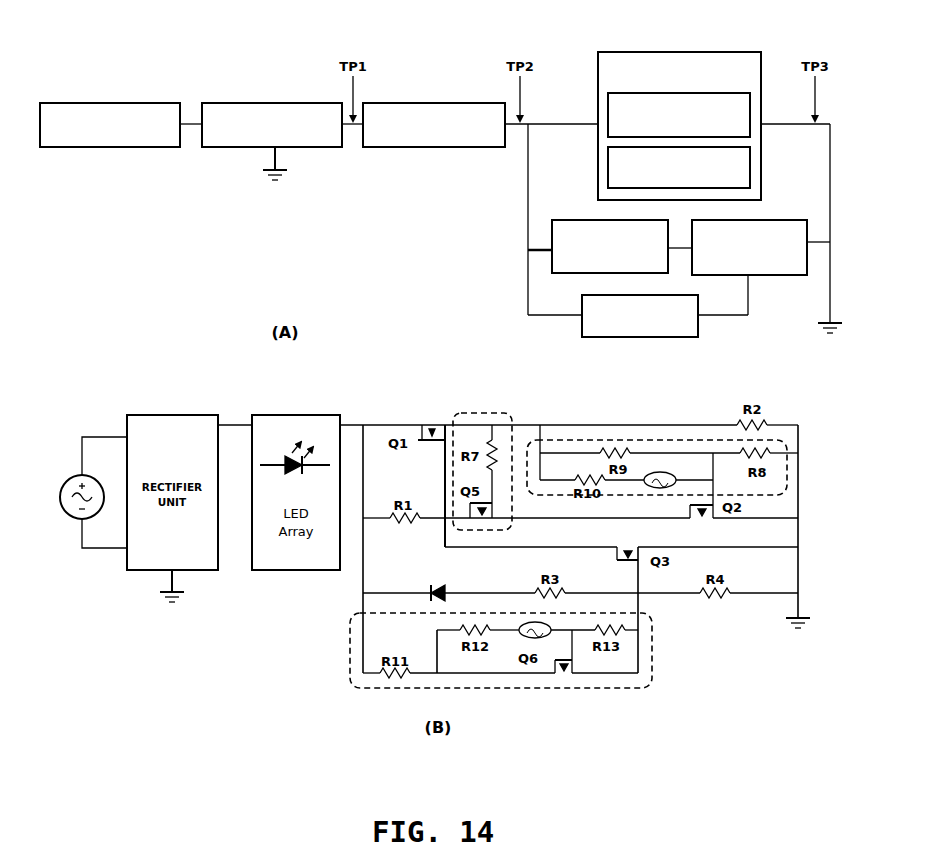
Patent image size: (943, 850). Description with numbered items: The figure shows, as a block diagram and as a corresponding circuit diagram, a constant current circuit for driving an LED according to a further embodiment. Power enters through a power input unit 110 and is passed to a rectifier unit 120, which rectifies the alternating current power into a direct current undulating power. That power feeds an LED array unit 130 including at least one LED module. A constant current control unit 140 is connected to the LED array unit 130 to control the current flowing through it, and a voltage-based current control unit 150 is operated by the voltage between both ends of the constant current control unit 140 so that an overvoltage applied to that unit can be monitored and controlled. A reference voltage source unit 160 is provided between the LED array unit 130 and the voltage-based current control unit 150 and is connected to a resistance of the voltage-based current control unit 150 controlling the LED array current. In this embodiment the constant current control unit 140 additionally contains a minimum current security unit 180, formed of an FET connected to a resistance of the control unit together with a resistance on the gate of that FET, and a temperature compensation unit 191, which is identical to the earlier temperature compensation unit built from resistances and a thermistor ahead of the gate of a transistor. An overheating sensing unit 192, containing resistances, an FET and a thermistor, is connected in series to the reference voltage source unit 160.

The power input unit 110 is at (107, 103).
The rectifier unit 120 is at (270, 103).
The LED array unit 130 is at (428, 103).
The constant current control unit 140 is at (620, 52).
The voltage-based current control unit 150 is at (778, 275).
The reference voltage source unit 160 is at (552, 236).
The minimum current security unit 180 is at (608, 172).
The temperature compensation unit 191 is at (608, 115).
The overheating sensing unit 192 is at (582, 333).